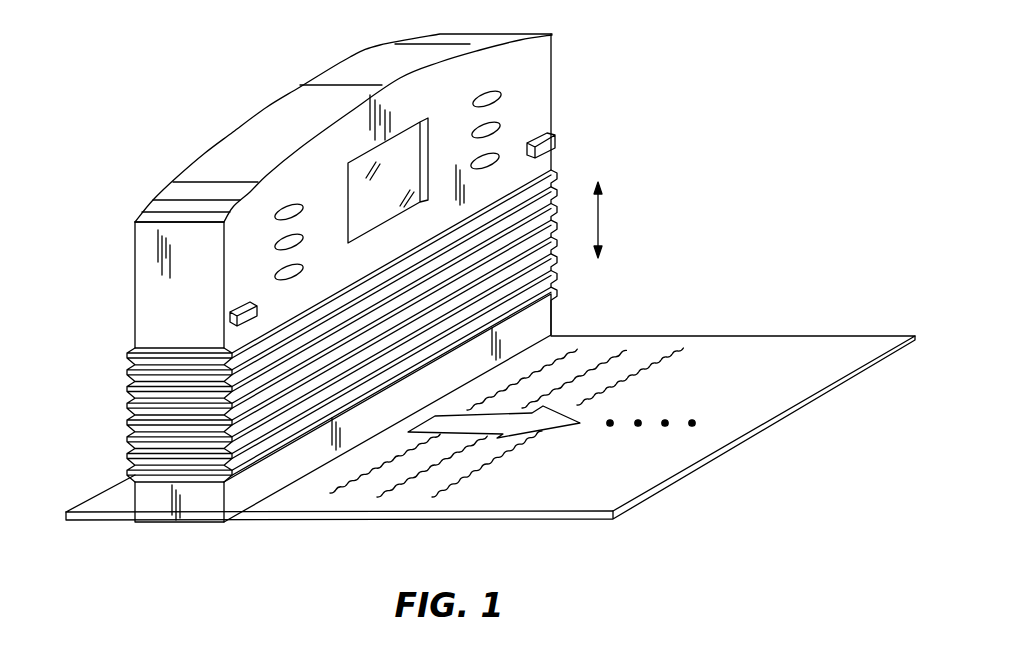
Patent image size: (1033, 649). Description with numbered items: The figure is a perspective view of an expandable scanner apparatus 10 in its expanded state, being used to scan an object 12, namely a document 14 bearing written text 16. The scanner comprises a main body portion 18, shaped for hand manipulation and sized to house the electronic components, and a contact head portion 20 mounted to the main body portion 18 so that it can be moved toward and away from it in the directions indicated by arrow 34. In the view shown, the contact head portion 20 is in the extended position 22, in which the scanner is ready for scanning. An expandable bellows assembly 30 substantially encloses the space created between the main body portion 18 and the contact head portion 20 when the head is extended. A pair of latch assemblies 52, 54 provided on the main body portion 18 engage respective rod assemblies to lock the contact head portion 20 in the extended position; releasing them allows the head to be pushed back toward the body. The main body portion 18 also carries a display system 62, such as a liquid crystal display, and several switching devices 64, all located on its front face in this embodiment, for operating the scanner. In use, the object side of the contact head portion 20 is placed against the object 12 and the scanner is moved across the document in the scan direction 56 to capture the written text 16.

The expandable scanner apparatus 10 is at (185, 52).
The object 12 is at (745, 310).
The document 14 is at (763, 428).
The written text 16 is at (645, 378).
The main body portion 18 is at (133, 247).
The contact head portion 20 is at (134, 497).
The extended position 22 is at (553, 306).
The expandable bellows assembly 30 is at (128, 404).
The arrow 34 is at (600, 218).
The latch assembly 52 is at (247, 302).
The latch assembly 54 is at (556, 140).
The scan direction 56 is at (560, 432).
The display system 62 is at (428, 136).
The switching devices 64 is at (498, 155).